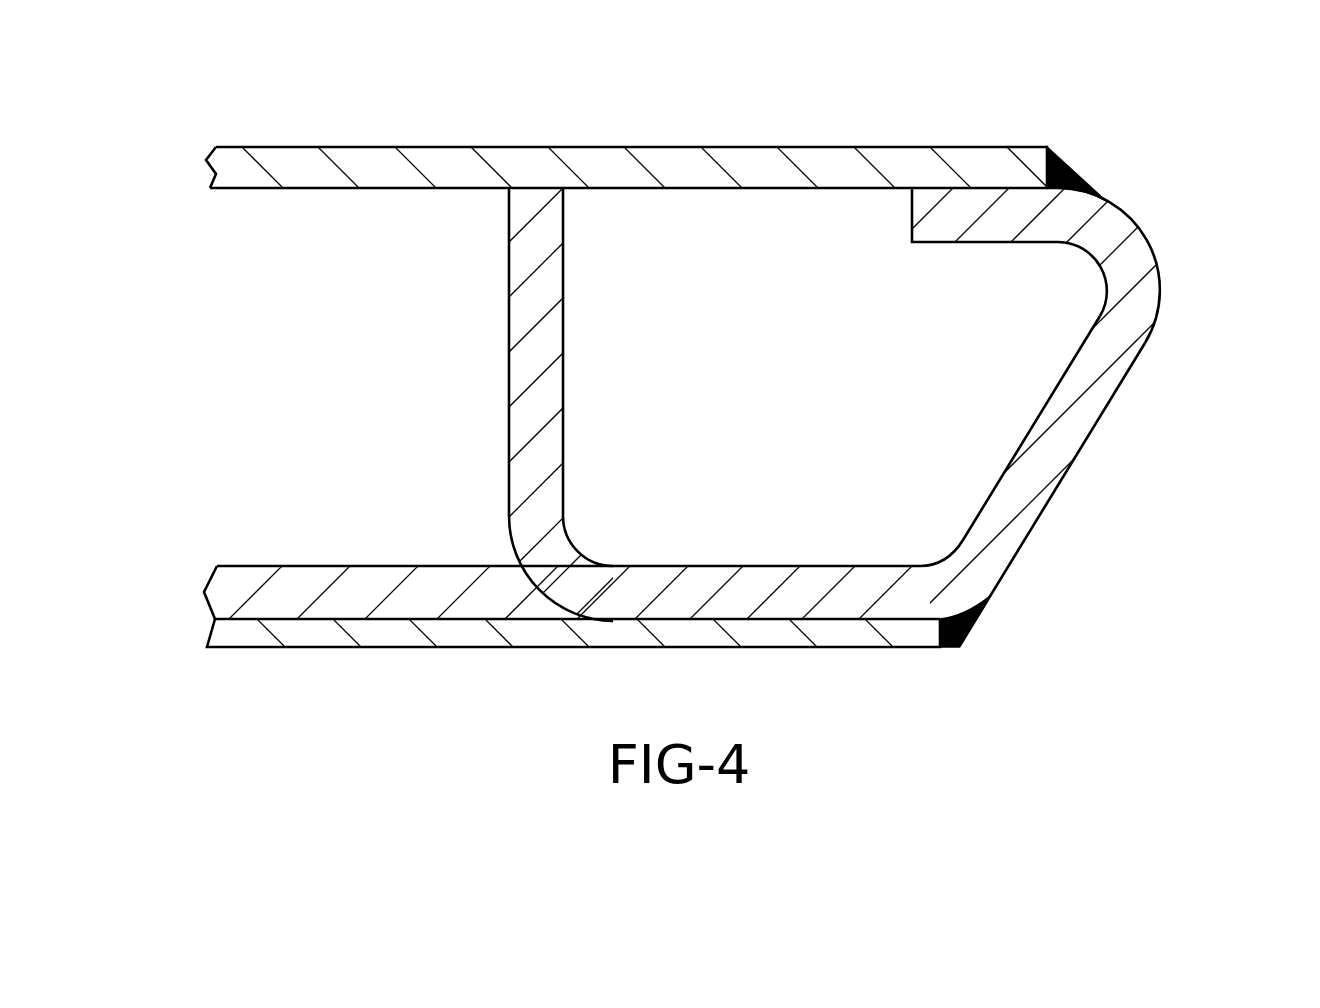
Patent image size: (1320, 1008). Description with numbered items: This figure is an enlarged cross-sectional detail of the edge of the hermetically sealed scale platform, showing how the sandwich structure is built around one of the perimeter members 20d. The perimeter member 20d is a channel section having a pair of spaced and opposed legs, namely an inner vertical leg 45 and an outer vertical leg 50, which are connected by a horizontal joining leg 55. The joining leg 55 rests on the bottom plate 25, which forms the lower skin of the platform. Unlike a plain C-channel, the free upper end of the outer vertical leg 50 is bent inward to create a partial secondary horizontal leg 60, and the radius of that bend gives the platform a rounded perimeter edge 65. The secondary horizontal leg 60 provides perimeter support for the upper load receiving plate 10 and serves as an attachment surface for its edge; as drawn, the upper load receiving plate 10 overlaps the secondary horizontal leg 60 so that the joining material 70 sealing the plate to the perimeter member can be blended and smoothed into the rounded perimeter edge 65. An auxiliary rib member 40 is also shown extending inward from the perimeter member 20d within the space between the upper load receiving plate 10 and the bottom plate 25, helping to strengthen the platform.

The upper load receiving plate 10 is at (651, 147).
The joining material 70 is at (1066, 164).
The rounded perimeter edge 65 is at (1148, 255).
The secondary horizontal leg 60 is at (975, 243).
The outer vertical leg 50 is at (1098, 423).
The perimeter member 20d is at (1082, 534).
The joining leg 55 is at (770, 566).
The inner vertical leg 45 is at (563, 327).
The auxiliary rib member 40 is at (621, 350).
The bottom plate 25 is at (386, 647).